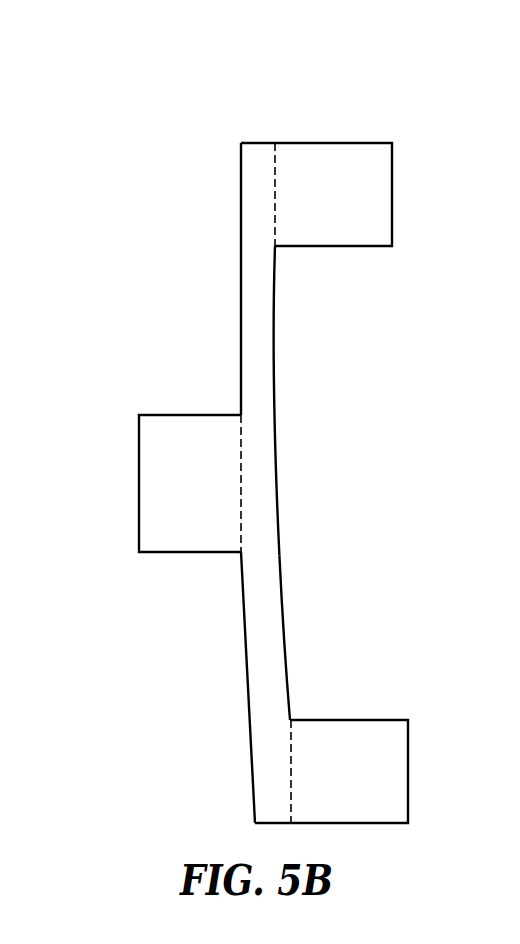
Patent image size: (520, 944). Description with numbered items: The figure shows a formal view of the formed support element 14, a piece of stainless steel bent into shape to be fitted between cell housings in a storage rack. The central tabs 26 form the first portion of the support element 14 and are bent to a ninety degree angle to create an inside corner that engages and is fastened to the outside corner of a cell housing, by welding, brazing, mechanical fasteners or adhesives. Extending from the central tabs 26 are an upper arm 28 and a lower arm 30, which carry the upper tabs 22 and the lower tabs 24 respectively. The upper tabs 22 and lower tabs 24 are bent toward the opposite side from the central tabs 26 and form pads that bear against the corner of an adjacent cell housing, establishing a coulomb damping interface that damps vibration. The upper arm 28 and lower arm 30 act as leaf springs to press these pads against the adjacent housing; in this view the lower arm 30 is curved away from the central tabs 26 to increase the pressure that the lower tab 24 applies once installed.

The support element 14 is at (214, 147).
The upper tabs 22 is at (367, 193).
The lower tabs 24 is at (366, 770).
The central tabs 26 is at (190, 484).
The upper arm 28 is at (257, 322).
The lower arm 30 is at (265, 636).